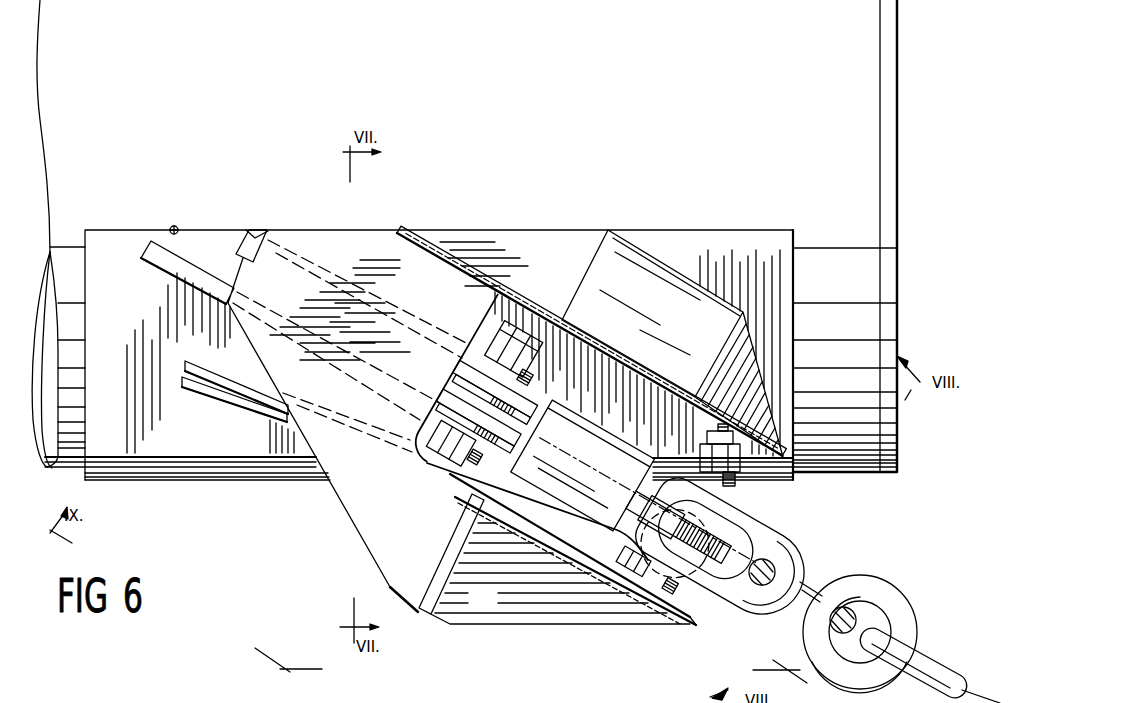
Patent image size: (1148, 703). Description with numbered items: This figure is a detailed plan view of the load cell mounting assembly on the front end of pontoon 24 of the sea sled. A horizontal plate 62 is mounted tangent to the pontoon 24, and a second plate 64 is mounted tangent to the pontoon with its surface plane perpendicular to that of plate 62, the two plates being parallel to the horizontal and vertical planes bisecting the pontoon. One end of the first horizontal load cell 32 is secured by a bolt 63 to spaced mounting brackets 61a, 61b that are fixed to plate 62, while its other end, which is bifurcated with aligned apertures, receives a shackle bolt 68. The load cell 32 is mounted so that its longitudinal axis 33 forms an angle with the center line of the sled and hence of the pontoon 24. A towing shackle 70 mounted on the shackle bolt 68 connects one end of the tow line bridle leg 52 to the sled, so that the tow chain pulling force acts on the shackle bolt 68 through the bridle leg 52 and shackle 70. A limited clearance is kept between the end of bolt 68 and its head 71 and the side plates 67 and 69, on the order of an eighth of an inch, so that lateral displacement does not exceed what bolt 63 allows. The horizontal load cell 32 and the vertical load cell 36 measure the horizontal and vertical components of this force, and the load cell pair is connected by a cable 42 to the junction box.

The pontoon 24 is at (64, 466).
The horizontal load cell 32 is at (577, 400).
The longitudinal axis 33 is at (612, 472).
The vertical load cell 36 is at (736, 510).
The cable 42 is at (219, 390).
The tow line bridle leg 52 is at (912, 594).
The mounting bracket 61a is at (480, 330).
The mounting bracket 61b is at (427, 430).
The plate 62 is at (711, 232).
The bolt 63 is at (535, 316).
The second plate 64 is at (200, 478).
The side plate 67 is at (635, 385).
The shackle bolt 68 is at (737, 442).
The side plate 69 is at (550, 533).
The towing shackle 70 is at (800, 571).
The head 71 is at (645, 556).